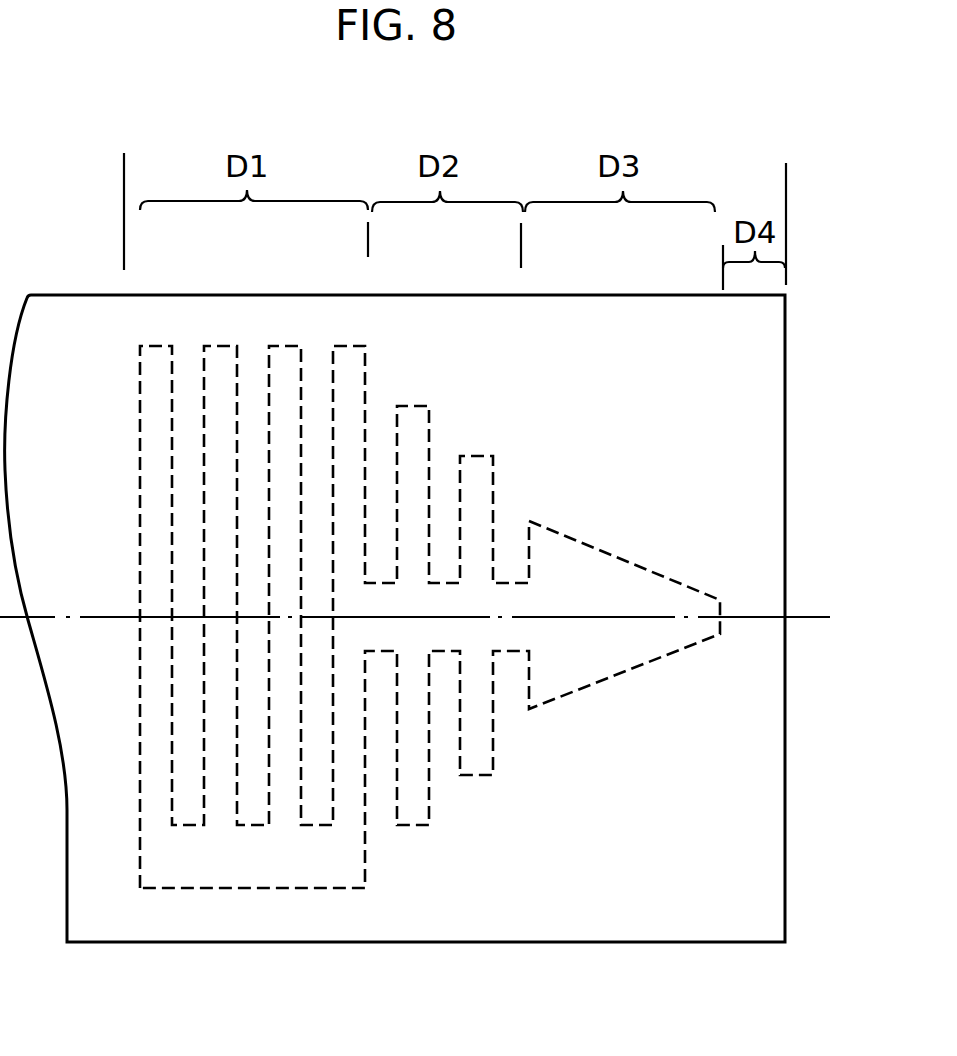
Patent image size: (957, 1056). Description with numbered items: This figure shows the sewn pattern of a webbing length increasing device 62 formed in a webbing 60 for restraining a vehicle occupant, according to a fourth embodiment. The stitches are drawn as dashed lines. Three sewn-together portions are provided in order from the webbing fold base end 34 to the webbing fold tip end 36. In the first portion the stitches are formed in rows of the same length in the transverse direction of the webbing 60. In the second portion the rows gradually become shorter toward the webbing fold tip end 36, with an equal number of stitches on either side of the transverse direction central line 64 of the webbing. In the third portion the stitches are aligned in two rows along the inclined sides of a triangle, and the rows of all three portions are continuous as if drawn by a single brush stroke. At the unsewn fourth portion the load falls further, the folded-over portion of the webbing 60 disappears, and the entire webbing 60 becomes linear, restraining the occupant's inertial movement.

The webbing fold base end 34 is at (124, 232).
The webbing fold tip end 36 is at (787, 237).
The webbing 60 is at (792, 543).
The webbing length increasing device 62 is at (424, 943).
The transverse direction central line 64 is at (798, 619).